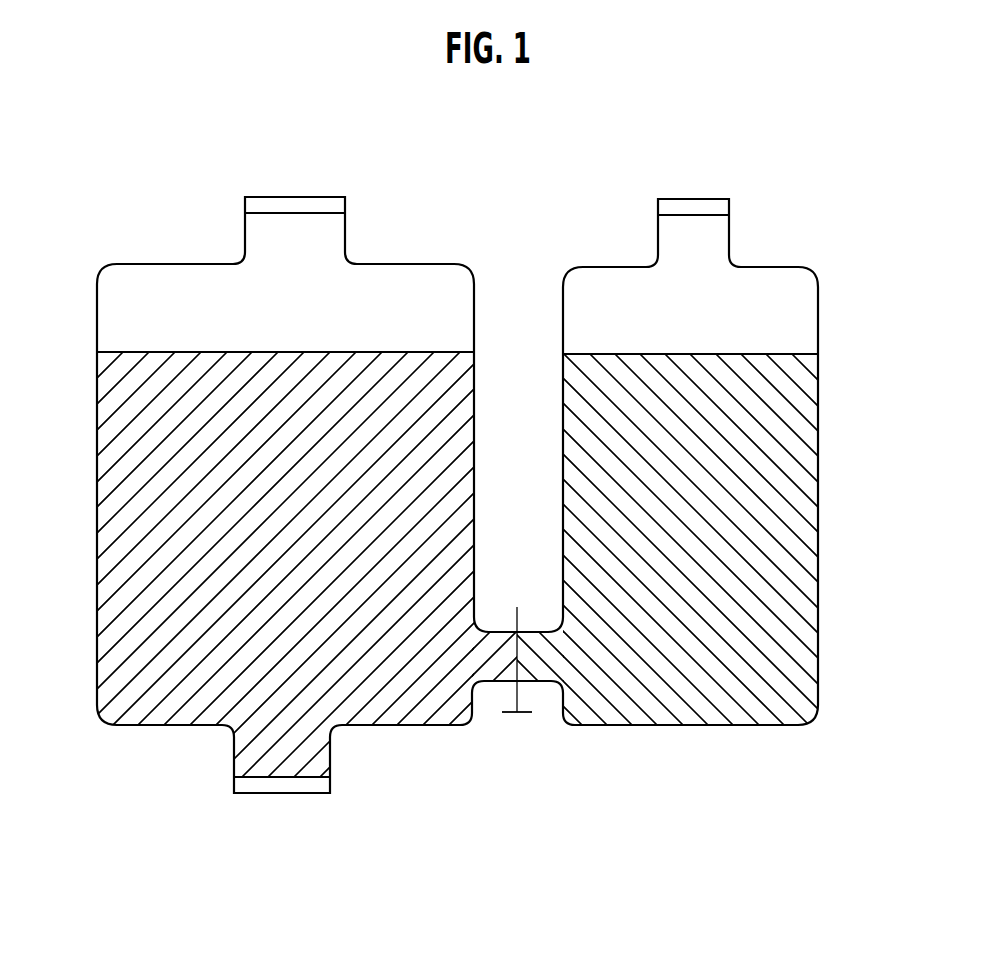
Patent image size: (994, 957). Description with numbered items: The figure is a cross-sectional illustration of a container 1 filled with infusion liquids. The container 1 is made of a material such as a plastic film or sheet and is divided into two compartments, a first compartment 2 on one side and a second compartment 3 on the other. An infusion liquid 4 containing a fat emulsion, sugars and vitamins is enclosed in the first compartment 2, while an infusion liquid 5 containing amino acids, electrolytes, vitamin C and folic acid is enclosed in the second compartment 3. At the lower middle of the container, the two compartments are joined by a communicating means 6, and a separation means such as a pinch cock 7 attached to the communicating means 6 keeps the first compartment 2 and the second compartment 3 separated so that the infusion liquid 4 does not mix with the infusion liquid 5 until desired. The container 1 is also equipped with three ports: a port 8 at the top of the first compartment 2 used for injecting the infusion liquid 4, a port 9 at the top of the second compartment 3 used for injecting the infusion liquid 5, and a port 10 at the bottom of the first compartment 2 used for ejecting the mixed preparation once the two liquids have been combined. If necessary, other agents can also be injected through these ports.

The container 1 is at (800, 191).
The first compartment 2 is at (115, 318).
The second compartment 3 is at (800, 323).
The infusion liquid 4 is at (106, 446).
The infusion liquid 5 is at (790, 458).
The communicating means 6 is at (494, 677).
The pinch cock 7 is at (519, 715).
The port 8 is at (293, 198).
The port 9 is at (688, 199).
The port 10 is at (331, 787).